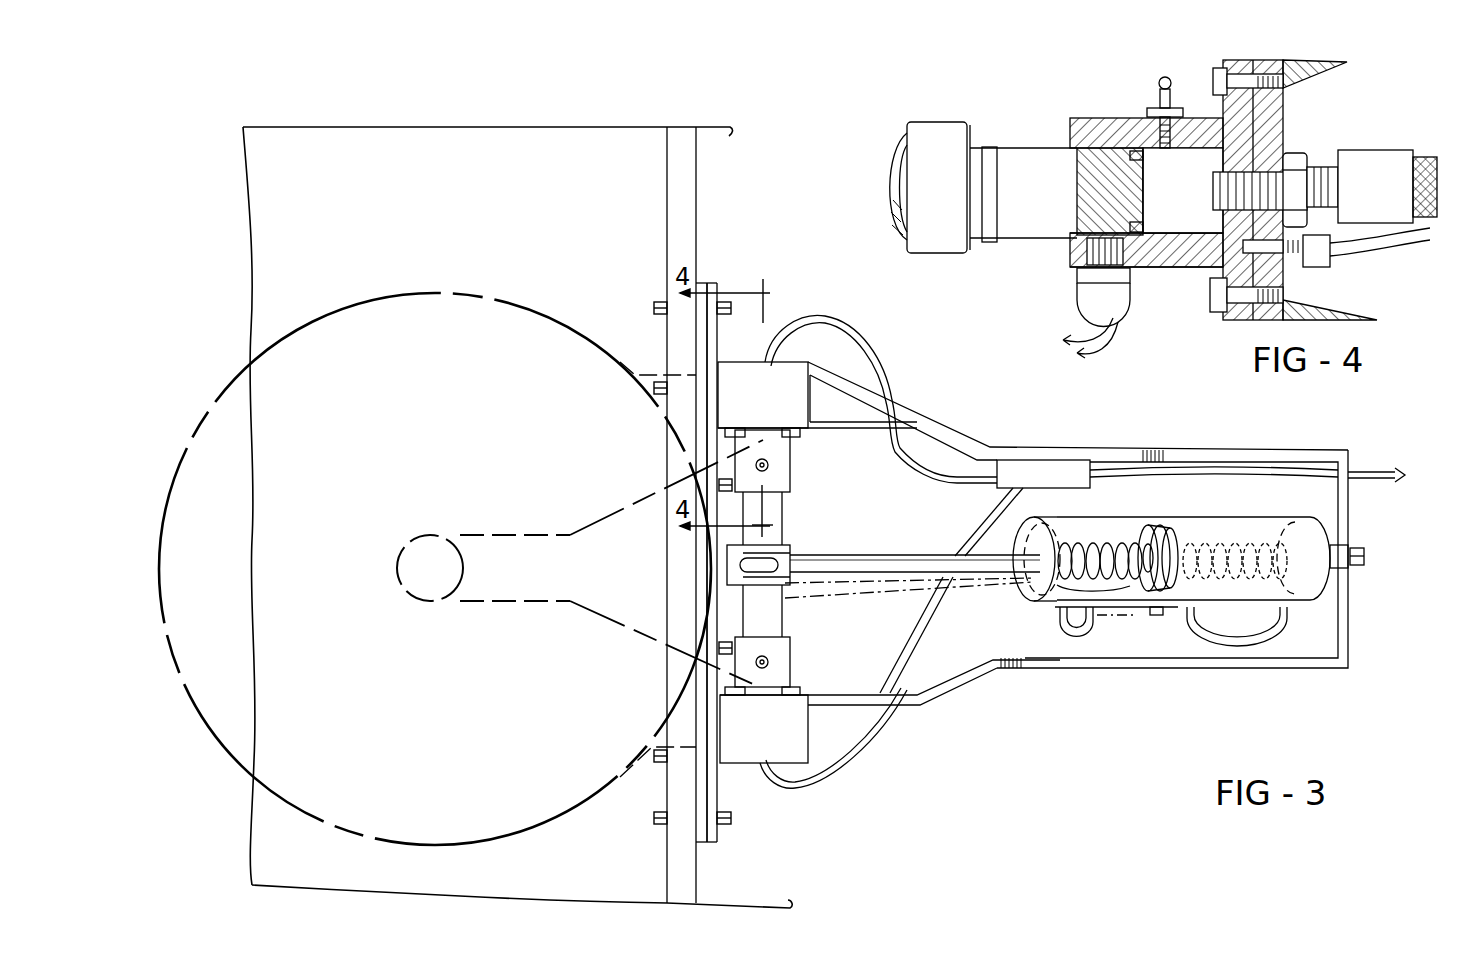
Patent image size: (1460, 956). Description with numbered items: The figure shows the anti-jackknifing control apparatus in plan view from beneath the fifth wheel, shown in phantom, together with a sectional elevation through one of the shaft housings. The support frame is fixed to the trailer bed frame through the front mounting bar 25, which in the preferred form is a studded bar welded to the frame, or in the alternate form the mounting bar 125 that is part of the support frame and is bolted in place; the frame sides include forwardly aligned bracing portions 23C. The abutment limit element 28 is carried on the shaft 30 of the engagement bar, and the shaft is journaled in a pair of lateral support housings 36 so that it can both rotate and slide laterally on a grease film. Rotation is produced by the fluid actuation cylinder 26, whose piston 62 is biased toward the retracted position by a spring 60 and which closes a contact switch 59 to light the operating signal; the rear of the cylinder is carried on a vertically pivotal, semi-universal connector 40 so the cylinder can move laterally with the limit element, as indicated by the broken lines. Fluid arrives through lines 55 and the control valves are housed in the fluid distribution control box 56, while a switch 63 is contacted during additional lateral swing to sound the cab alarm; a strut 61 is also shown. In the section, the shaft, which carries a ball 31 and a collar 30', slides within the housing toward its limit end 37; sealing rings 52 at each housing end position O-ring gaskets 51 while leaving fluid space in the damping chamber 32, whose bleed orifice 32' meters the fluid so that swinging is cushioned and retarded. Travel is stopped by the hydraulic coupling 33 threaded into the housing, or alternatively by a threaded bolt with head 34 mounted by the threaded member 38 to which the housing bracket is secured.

In FIG. 3, the mounting bar 25 is at (654, 756).
In FIG. 3, the mounting bar 125 is at (697, 613).
In FIG. 3, the forwardly aligned bracing portion 23C is at (833, 422).
In FIG. 3, the threaded member 38 is at (780, 768).
In FIG. 4, the threaded member 38 is at (1283, 80).
In FIG. 3, the lateral support housing 36 is at (792, 660).
In FIG. 4, the lateral support housing 36 is at (1195, 123).
In FIG. 3, the abutment limit element 28 is at (725, 557).
In FIG. 4, the abutment limit element 28 is at (957, 140).
In FIG. 3, the fluid actuation cylinder 26 is at (872, 523).
In FIG. 3, the strut 61 is at (1010, 545).
In FIG. 3, the fluid distribution control box 56 is at (1057, 470).
In FIG. 3, the fluid line 55 is at (1368, 470).
In FIG. 3, the contact switch 59 is at (1177, 600).
In FIG. 3, the spring 60 is at (1107, 547).
In FIG. 3, the piston 62 is at (1143, 530).
In FIG. 3, the vertically pivotal connector 40 is at (1348, 545).
In FIG. 3, the switch 63 is at (1048, 610).
In FIG. 4, the switch 63 is at (1087, 258).
In FIG. 4, the shaft 30 is at (873, 186).
In FIG. 4, the collar 30' is at (976, 216).
In FIG. 4, the ball 31 is at (1097, 118).
In FIG. 4, the sealing ring 52 is at (1152, 153).
In FIG. 4, the O-ring gasket 51 is at (1138, 185).
In FIG. 4, the limit end 37 is at (1236, 60).
In FIG. 4, the hydraulic coupling 33 is at (1272, 165).
In FIG. 4, the head 34 is at (1360, 222).
In FIG. 4, the chamber 32 is at (1146, 274).
In FIG. 4, the chamber bleed orifice 32' is at (1146, 269).